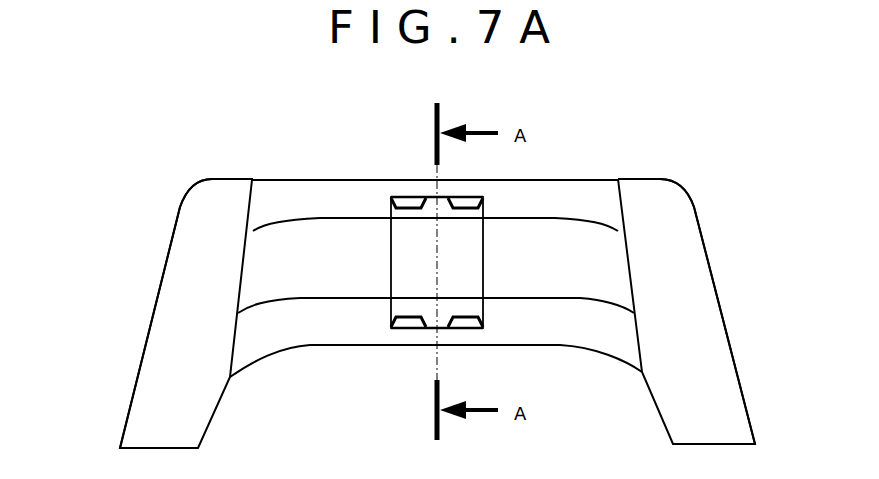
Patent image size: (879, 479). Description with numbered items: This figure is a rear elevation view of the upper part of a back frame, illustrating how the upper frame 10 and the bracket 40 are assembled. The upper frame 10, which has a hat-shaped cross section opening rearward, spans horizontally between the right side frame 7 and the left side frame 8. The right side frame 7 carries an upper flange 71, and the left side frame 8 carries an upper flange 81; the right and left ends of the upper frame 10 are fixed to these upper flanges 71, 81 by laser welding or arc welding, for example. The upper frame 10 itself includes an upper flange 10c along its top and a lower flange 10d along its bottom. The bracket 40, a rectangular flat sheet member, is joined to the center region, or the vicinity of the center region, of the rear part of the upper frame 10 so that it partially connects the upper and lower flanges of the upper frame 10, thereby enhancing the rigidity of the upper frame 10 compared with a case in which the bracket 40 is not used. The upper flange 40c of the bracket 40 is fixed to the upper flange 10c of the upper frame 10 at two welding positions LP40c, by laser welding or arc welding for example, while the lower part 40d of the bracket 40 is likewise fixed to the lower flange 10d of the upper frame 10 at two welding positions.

The right side frame 7 is at (118, 430).
The upper flange 71 is at (208, 271).
The left side frame 8 is at (752, 417).
The upper flange 81 is at (668, 262).
The upper frame 10 is at (436, 258).
The upper flange 10c is at (572, 190).
The lower flange 10d is at (592, 338).
The bracket 40 is at (451, 288).
The upper flange 40c is at (389, 199).
The lower part 40d is at (388, 316).
The welding positions LP40c is at (417, 209).